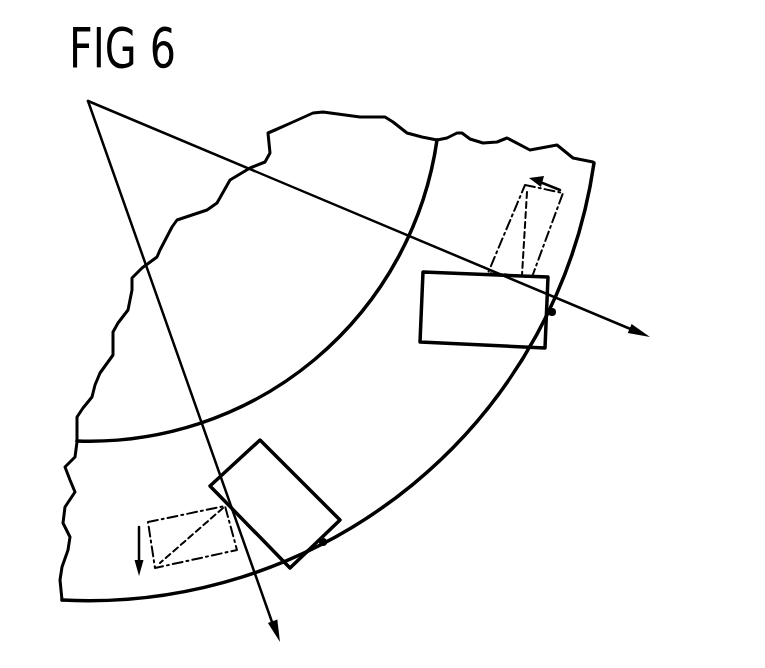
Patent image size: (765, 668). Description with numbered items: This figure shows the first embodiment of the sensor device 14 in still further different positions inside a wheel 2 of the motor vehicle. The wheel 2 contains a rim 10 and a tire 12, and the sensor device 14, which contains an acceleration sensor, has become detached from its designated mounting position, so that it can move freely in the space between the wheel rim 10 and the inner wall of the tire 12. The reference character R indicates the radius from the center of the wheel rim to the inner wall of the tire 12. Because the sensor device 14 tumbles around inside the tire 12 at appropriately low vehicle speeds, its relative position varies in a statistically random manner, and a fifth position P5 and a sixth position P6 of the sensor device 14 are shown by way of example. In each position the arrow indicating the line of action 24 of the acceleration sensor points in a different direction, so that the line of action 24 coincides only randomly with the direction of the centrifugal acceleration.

The wheel 2 is at (542, 120).
The rim 10 is at (303, 347).
The tire 12 is at (442, 458).
The sensor device 14 is at (458, 333).
The line of action 24 is at (523, 247).
The fifth position P5 is at (553, 312).
The sixth position P6 is at (325, 543).
The radius to the inner wall of the tire R is at (369, 371).